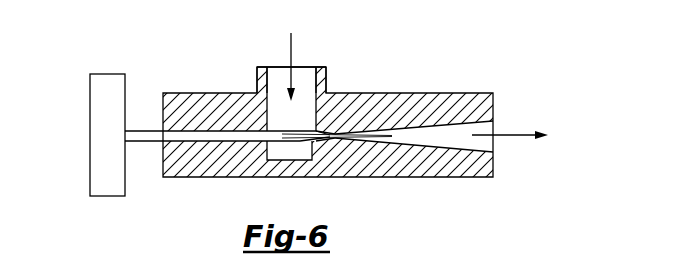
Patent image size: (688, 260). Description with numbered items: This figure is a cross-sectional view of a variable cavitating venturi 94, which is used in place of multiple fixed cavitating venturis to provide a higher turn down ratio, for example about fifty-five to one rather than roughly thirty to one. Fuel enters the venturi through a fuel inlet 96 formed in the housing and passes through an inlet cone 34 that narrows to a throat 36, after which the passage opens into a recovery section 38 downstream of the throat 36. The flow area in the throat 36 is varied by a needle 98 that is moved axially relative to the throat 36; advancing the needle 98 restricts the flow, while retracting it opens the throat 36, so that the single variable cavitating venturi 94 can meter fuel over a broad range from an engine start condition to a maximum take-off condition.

The variable cavitating venturi 94 is at (447, 51).
The fuel inlet 96 is at (270, 71).
The needle 98 is at (262, 156).
The throat 36 is at (330, 136).
The inlet cone 34 is at (320, 140).
The recovery section 38 is at (462, 122).